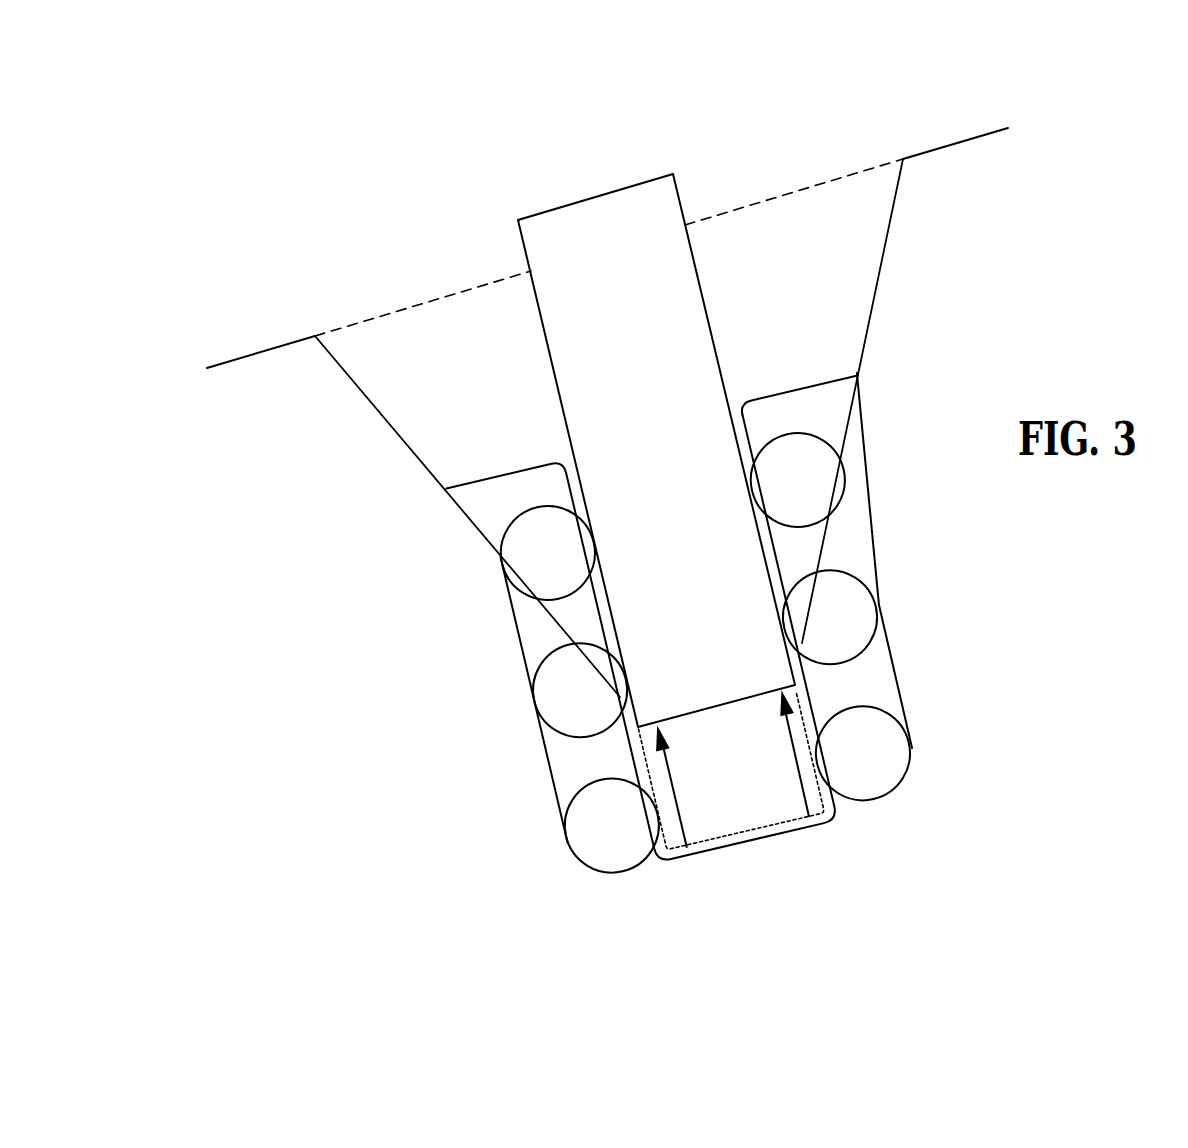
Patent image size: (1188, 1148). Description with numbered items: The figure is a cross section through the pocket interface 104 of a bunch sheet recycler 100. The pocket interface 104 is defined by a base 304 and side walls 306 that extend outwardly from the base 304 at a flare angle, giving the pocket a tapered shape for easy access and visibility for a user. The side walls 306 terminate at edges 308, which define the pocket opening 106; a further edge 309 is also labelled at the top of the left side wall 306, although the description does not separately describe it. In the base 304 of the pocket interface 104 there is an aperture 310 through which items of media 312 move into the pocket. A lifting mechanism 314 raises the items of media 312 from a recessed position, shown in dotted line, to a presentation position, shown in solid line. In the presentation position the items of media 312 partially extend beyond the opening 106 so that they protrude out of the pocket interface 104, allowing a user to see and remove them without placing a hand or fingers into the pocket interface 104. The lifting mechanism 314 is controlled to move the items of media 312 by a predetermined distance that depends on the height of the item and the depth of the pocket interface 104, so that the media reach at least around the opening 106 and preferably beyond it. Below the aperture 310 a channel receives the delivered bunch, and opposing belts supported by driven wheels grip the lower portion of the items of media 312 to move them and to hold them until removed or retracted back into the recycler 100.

The bunch sheet recycler 100 is at (330, 590).
The pocket interface 104 is at (803, 123).
The pocket opening 106 is at (392, 287).
The base 304 is at (802, 643).
The side walls 306 is at (360, 397).
The edges 308 is at (903, 160).
The top surface 309 is at (260, 350).
The aperture 310 is at (620, 697).
The items of media 312 is at (577, 202).
The lifting mechanism 314 is at (743, 641).